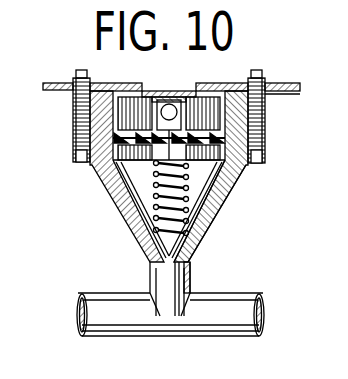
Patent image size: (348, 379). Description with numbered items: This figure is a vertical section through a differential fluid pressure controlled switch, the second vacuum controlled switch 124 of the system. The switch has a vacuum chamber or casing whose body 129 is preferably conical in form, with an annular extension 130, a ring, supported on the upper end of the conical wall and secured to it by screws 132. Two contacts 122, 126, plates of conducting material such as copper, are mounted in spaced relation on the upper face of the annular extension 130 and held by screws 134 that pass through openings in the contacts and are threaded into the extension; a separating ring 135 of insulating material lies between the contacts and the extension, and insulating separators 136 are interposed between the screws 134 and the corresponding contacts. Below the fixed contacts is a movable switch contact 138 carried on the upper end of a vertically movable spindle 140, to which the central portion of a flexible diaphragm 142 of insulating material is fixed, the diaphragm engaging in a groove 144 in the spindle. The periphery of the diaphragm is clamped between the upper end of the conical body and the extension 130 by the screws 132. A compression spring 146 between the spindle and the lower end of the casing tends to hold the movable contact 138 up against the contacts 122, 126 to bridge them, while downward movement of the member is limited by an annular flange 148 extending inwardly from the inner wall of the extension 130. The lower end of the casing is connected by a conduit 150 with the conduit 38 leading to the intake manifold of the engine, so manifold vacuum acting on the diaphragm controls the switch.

The conduit 38 is at (208, 318).
The contact 122 is at (289, 84).
The second vacuum controlled switch 124 is at (88, 180).
The second contact 126 is at (50, 83).
The body 129 is at (118, 196).
The annular extension 130 is at (266, 122).
The screws 132 is at (75, 158).
The screws 134 is at (73, 101).
The separating ring 135 is at (270, 95).
The separators 136 is at (80, 70).
The movable switch contact 138 is at (168, 103).
The spindle 140 is at (166, 106).
The flexible diaphragm 142 is at (230, 187).
The groove 144 is at (178, 103).
The compression spring 146 is at (205, 223).
The annular flange 148 is at (90, 136).
The conduit 150 is at (166, 265).